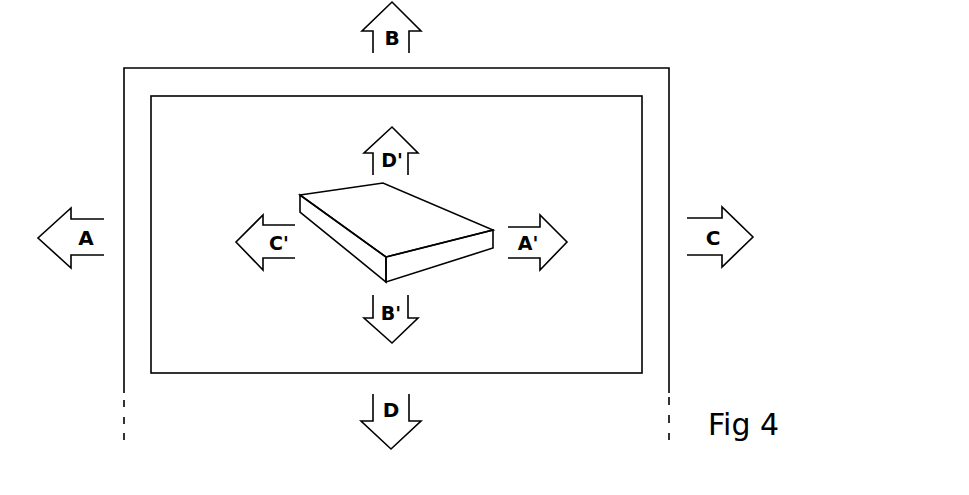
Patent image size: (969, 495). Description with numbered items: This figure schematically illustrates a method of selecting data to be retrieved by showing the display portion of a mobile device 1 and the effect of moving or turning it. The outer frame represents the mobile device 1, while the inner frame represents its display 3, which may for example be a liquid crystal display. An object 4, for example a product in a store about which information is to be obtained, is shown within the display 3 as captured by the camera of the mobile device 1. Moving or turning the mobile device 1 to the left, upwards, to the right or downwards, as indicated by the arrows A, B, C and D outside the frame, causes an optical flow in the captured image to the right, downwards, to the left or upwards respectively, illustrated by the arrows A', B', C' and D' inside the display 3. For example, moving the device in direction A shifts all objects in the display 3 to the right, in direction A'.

The mobile device 1 is at (124, 68).
The display 3 is at (151, 127).
The object 4 is at (443, 208).